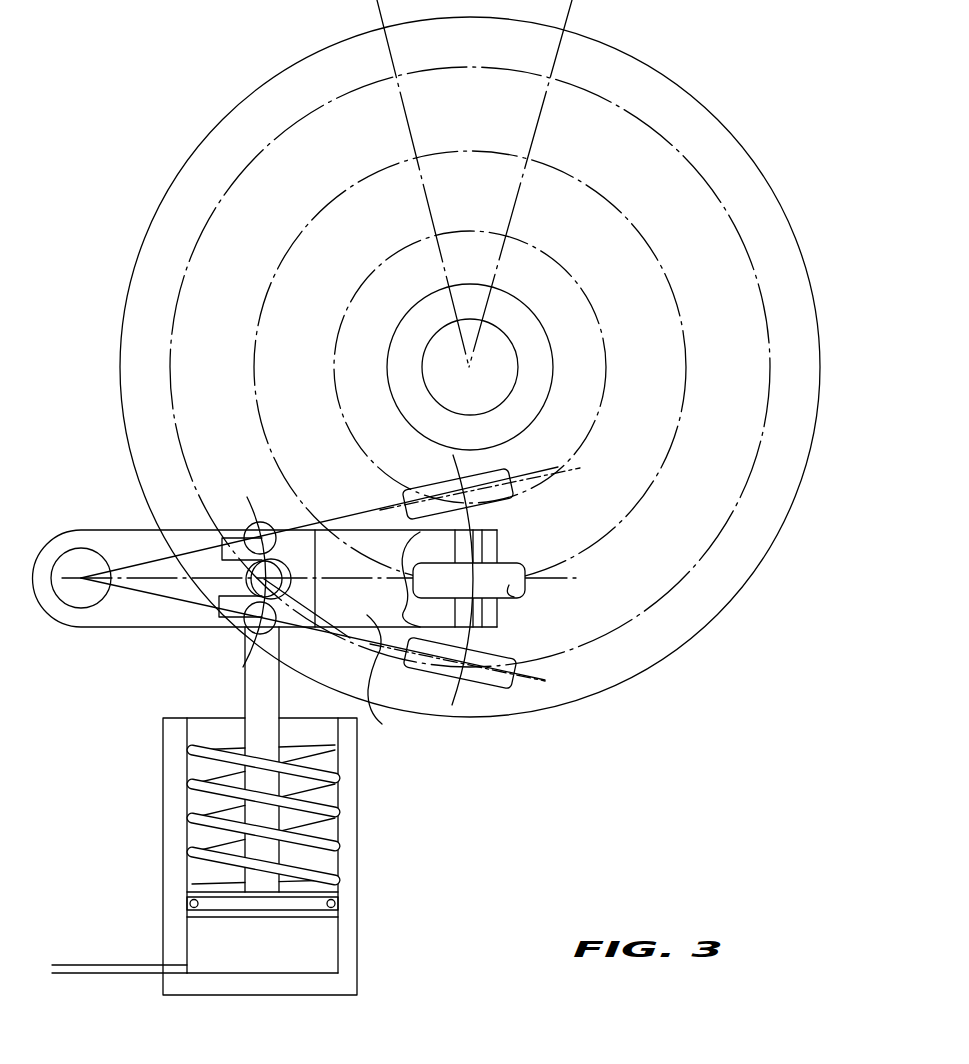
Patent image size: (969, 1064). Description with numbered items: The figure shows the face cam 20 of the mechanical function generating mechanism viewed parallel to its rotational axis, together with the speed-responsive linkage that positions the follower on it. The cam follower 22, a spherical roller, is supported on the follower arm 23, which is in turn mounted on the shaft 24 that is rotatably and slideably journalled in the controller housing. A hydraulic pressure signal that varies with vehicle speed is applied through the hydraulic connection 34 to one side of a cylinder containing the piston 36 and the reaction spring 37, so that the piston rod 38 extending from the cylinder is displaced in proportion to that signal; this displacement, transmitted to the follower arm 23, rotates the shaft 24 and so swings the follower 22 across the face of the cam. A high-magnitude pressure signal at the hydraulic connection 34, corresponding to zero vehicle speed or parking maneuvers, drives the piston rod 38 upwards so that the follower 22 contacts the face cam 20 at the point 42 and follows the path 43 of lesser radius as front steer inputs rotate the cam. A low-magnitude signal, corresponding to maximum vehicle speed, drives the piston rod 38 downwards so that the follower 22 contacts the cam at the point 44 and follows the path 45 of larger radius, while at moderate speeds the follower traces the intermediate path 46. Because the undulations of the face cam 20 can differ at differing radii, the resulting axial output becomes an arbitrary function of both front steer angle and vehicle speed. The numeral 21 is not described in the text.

The face cam 20 is at (768, 510).
The hub 21 is at (502, 369).
The cam follower 22 is at (510, 591).
The follower arm 23 is at (420, 599).
The shaft 24 is at (84, 598).
The hydraulic connection 34 is at (72, 962).
The piston 36 is at (341, 902).
The reaction spring 37 is at (341, 779).
The piston rod 38 is at (252, 682).
The point 42 is at (496, 504).
The path 43 is at (566, 467).
The point 44 is at (468, 668).
The path 45 is at (684, 578).
The path 46 is at (660, 474).